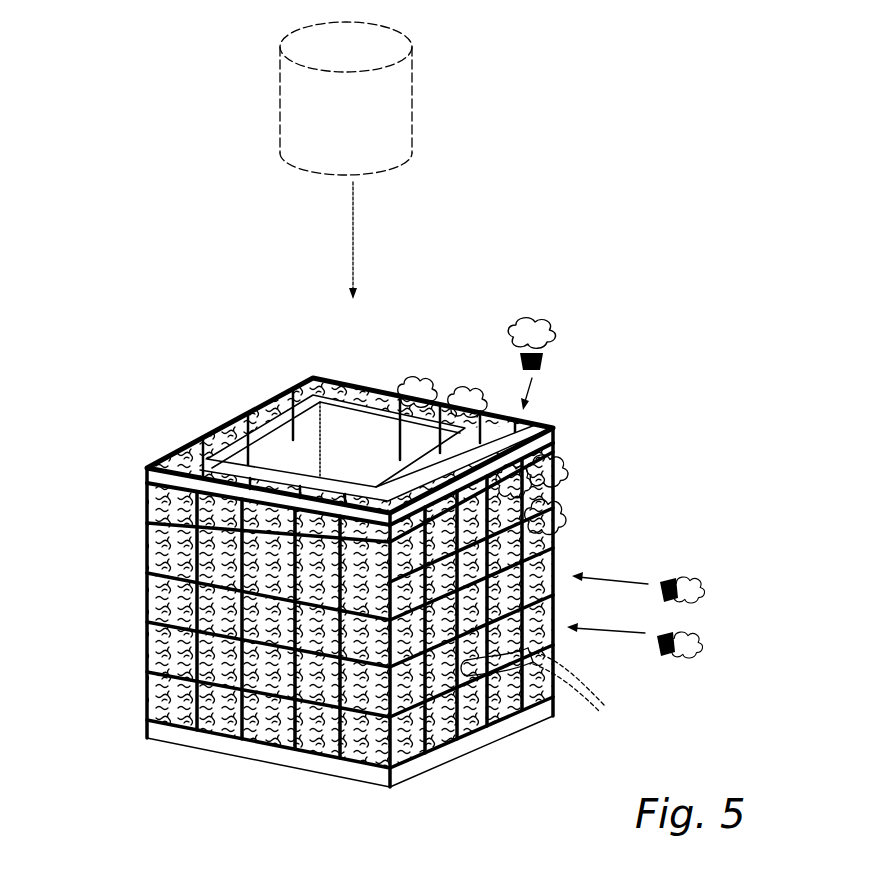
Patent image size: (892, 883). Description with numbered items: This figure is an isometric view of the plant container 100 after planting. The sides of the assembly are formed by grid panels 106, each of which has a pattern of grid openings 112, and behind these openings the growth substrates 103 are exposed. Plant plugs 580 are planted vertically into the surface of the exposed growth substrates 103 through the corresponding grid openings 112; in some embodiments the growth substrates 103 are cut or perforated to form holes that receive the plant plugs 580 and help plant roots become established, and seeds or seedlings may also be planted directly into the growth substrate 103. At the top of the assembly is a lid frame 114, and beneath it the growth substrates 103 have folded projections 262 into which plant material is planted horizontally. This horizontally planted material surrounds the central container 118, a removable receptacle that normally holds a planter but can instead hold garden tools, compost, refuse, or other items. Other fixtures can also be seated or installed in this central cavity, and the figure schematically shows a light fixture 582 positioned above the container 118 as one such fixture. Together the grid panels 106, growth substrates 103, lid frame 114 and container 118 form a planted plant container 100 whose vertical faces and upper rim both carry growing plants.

The plant container 100 is at (608, 198).
The growth substrates 103 is at (218, 592).
The grid panels 106 is at (482, 703).
The grid openings 112 is at (488, 545).
The lid frame 114 is at (367, 388).
The container 118 is at (318, 400).
The folded projections 262 is at (248, 422).
The plant plugs 580 is at (550, 330).
The light fixture 582 is at (413, 92).